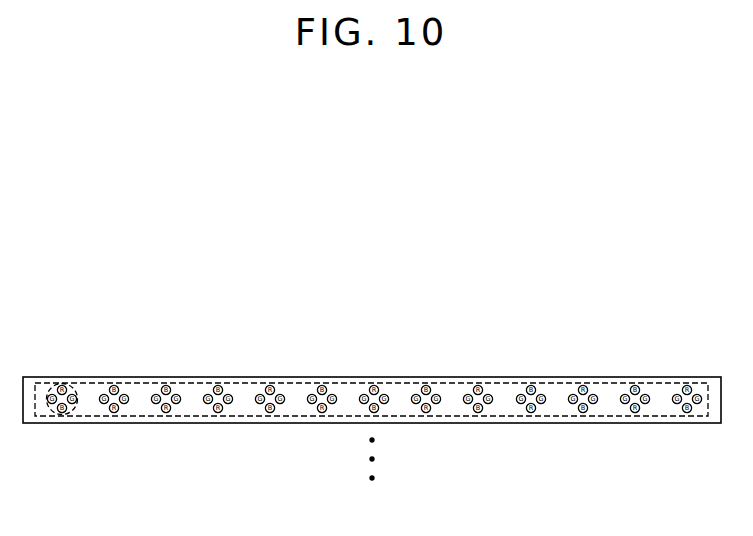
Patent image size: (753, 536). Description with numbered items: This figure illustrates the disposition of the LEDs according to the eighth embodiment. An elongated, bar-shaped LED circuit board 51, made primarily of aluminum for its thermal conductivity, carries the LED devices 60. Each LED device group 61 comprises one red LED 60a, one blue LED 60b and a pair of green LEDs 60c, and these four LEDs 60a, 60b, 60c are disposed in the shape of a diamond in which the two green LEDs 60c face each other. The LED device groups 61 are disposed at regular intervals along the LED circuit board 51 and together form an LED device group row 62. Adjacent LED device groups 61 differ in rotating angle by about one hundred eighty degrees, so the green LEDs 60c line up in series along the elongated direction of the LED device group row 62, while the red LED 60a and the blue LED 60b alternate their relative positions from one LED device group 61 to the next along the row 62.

The LED circuit board 51 is at (585, 377).
The LED device group row 62 is at (460, 383).
The LED device 60 is at (115, 385).
The red LED 60a is at (105, 412).
The blue LED 60b is at (112, 384).
The green LED 60c is at (183, 395).
The LED device group 61 is at (62, 416).